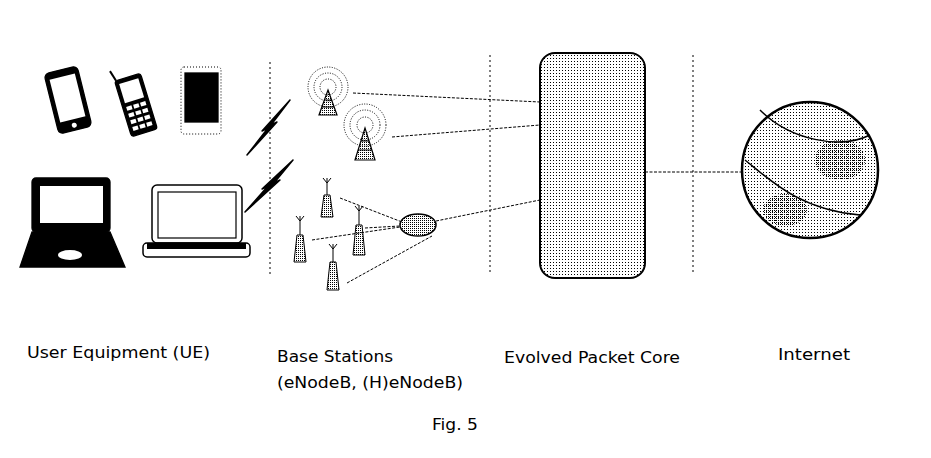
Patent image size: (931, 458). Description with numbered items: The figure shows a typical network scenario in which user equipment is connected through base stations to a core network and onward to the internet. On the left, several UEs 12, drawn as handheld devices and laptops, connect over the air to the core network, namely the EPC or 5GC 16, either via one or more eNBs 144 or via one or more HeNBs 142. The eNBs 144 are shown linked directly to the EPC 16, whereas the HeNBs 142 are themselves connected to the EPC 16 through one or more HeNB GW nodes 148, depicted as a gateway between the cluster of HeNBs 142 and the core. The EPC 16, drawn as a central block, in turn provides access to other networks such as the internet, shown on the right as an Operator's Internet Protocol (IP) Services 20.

The UE 12 is at (213, 68).
The eNB 144 is at (318, 112).
The HeNB 142 is at (360, 256).
The HeNB GW node 148 is at (438, 233).
The EPC 16 is at (600, 218).
The Operator's Internet Protocol (IP) Services 20 is at (797, 237).